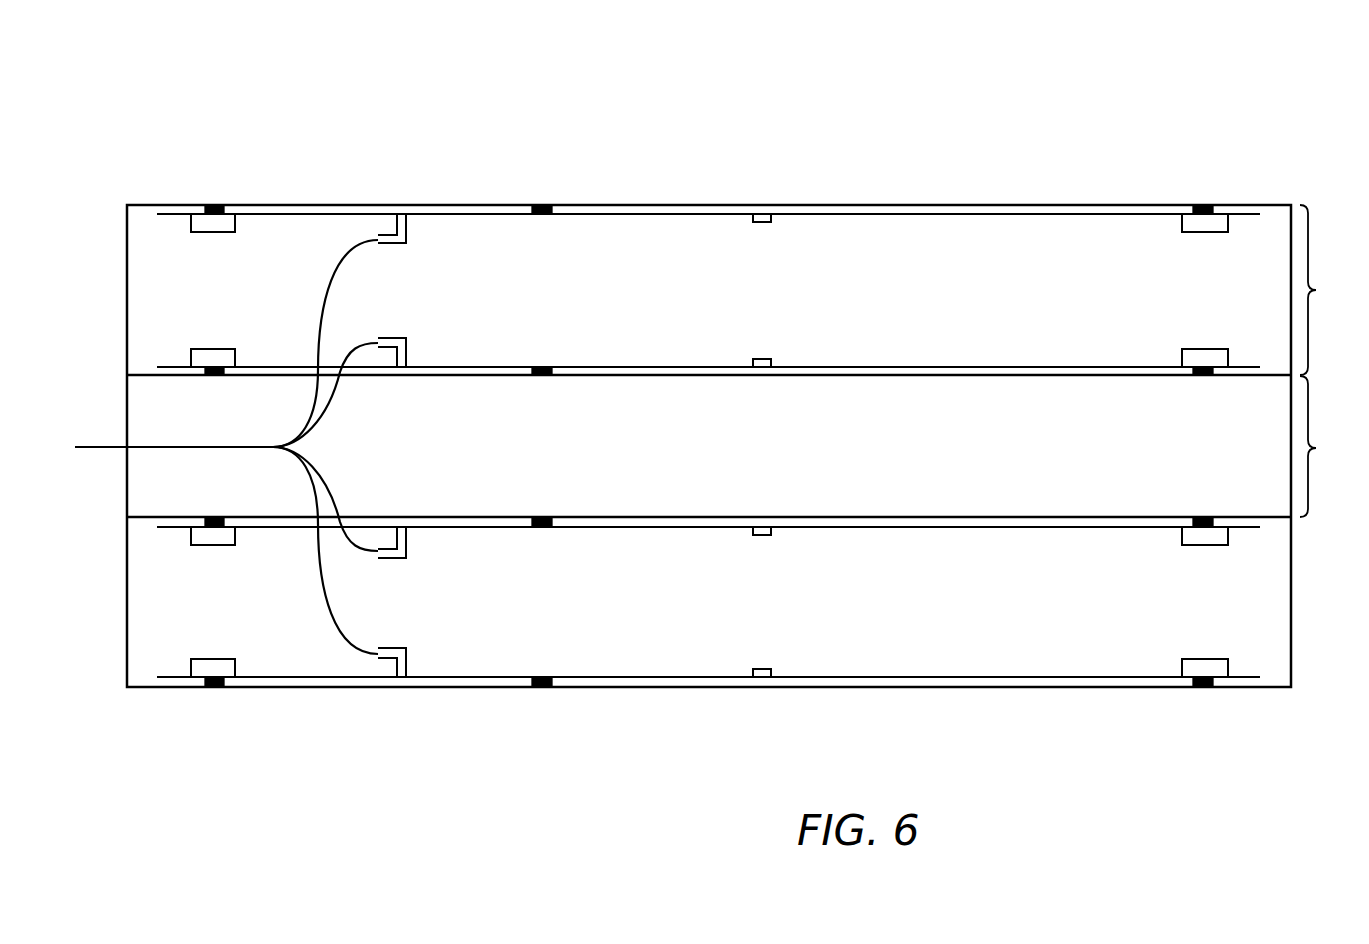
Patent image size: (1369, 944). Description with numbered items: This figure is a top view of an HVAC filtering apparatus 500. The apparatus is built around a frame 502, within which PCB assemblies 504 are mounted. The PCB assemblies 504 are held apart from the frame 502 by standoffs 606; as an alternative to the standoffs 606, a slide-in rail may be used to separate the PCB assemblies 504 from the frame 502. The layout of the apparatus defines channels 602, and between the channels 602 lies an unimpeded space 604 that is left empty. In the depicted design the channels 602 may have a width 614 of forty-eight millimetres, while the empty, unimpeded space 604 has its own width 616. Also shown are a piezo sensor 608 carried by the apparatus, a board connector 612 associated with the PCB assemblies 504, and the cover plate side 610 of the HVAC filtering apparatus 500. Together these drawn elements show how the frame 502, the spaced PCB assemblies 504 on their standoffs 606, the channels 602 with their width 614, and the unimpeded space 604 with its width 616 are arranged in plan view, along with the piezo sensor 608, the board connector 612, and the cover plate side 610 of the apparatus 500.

The HVAC filtering apparatus 500 is at (1286, 96).
The frame 502 is at (780, 205).
The PCB assemblies 504 is at (975, 214).
The channels 602 is at (658, 317).
The unimpeded space 604 is at (879, 457).
The standoffs 606 is at (213, 688).
The piezo sensor 608 is at (1121, 309).
The cover plate side 610 is at (127, 517).
The board connector 612 is at (767, 360).
The width of channels 614 is at (1334, 290).
The width of empty space 616 is at (1334, 446).